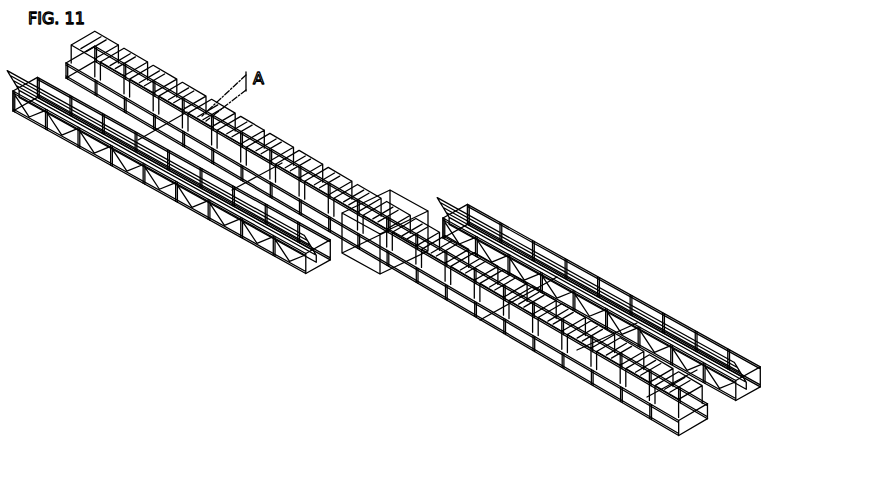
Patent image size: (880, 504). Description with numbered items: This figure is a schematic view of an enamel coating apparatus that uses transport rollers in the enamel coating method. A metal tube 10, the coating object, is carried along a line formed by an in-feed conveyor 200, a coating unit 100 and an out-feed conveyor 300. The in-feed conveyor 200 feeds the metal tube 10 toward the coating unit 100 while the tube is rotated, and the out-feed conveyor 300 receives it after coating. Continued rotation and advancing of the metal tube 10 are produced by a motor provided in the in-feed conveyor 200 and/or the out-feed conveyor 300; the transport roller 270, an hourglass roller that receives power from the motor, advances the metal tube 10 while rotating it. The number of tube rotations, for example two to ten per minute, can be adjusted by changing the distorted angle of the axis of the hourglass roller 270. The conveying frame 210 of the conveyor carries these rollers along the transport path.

The metal tube 10 is at (100, 141).
The coating unit 100 is at (408, 198).
The in-feed conveyor 200 is at (582, 256).
The conveying frame 210 is at (575, 372).
The transport roller 270 is at (632, 386).
The out-feed conveyor 300 is at (172, 233).